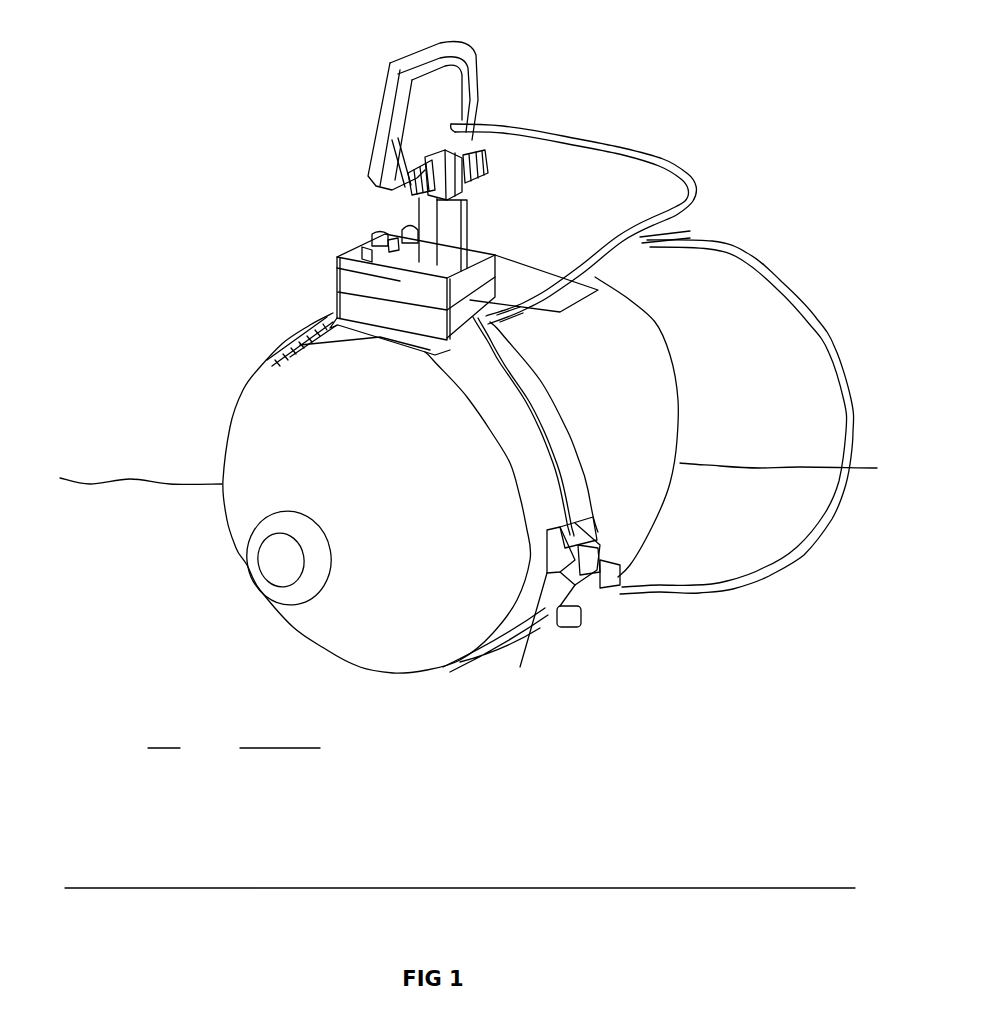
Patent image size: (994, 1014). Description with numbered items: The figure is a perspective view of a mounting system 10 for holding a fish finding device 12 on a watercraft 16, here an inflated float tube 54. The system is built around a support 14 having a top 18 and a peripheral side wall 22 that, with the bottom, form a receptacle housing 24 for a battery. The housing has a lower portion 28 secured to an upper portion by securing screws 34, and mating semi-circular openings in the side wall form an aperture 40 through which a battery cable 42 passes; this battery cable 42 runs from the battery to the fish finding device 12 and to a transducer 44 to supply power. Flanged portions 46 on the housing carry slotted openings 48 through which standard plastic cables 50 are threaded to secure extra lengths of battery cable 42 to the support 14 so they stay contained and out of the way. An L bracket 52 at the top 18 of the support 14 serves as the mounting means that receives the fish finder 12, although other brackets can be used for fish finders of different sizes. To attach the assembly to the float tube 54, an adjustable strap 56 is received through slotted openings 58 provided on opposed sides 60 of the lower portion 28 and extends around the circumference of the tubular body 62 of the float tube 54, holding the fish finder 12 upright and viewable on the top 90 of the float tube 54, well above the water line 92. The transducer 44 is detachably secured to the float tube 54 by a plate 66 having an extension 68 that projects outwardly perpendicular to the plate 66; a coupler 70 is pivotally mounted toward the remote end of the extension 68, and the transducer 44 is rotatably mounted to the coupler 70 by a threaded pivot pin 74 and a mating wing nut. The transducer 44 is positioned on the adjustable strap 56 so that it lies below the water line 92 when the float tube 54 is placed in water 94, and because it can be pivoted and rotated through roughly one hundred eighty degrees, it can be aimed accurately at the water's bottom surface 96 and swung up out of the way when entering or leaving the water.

The mounting system 10 is at (258, 118).
The fish finding device 12 is at (475, 82).
The support 14 is at (487, 250).
The watercraft 16 is at (613, 393).
The top 18 is at (375, 238).
The peripheral side wall 22 is at (340, 288).
The receptacle housing 24 is at (340, 310).
The lower portion 28 is at (343, 257).
The securing screws 34 is at (383, 238).
The aperture 40 is at (500, 253).
The battery cable 42 is at (683, 235).
The transducer 44 is at (590, 610).
The flanged portions 46 is at (365, 255).
The slotted openings 48 is at (468, 247).
The standard plastic cables 50 is at (337, 253).
The L bracket 52 is at (457, 222).
The inflated float tube 54 is at (237, 413).
The adjustable strap 56 is at (572, 477).
The slotted openings 58 is at (598, 290).
The opposed sides 60 is at (340, 283).
The tubular body 62 is at (667, 383).
The plate 66 is at (548, 560).
The extension 68 is at (637, 543).
The coupler 70 is at (618, 573).
The threaded pivot pin 74 is at (597, 556).
The top 90 is at (373, 308).
The water line 92 is at (760, 468).
The water 94 is at (234, 749).
The water's bottom surface 96 is at (518, 887).